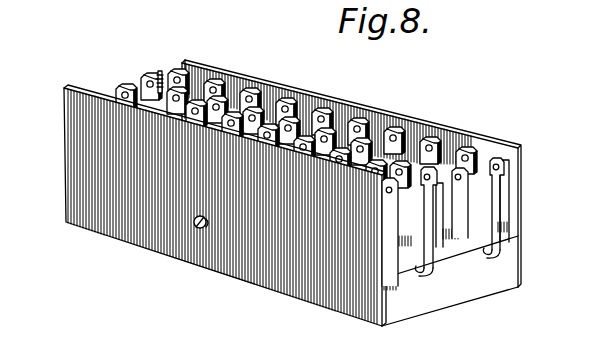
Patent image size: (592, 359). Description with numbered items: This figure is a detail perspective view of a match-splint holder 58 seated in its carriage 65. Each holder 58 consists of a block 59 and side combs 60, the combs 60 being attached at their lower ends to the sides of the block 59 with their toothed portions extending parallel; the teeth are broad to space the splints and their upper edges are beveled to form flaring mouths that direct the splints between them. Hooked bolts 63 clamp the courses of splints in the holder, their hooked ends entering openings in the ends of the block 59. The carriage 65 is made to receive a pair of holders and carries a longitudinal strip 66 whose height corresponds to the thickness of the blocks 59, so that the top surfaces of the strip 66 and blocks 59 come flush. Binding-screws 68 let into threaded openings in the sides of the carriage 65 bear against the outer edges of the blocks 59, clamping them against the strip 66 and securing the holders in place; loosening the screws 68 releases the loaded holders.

The match-splint holder 58 is at (445, 223).
The block 59 is at (499, 246).
The side comb 60 is at (148, 90).
The hooked bolt 63 is at (490, 216).
The carriage 65 is at (205, 197).
The longitudinal strip 66 is at (451, 256).
The binding-screw 68 is at (197, 229).